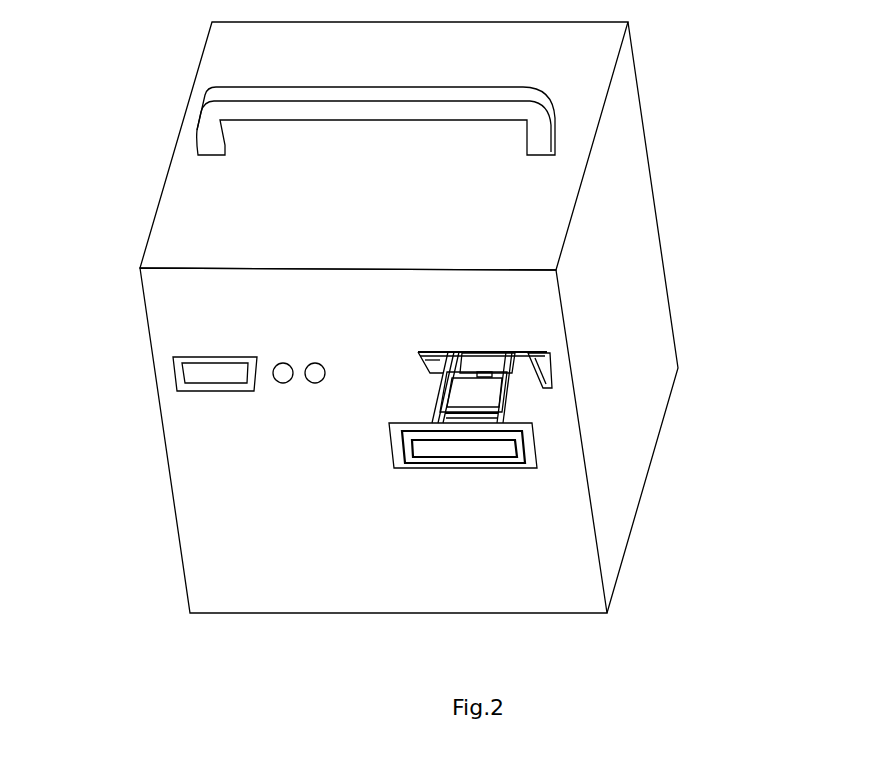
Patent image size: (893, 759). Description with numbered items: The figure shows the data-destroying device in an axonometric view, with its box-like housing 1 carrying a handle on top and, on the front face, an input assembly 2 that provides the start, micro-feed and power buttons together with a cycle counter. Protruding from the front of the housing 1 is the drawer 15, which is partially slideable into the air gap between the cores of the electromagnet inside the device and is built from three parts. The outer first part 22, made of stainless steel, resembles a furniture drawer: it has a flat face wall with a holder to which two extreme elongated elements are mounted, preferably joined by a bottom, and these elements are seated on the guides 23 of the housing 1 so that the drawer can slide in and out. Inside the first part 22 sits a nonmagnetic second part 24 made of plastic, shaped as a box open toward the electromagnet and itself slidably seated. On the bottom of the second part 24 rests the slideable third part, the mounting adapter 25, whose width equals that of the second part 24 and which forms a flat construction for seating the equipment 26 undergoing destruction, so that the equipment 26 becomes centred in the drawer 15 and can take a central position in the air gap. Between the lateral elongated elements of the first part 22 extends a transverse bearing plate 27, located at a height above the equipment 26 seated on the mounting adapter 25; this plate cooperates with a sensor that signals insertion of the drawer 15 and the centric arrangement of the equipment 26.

The housing 1 is at (623, 533).
The input assembly 2 is at (309, 376).
The drawer 15 is at (530, 443).
The outer first part 22 is at (513, 413).
The guides 23 is at (445, 359).
The nonmagnetic second part 24 is at (468, 397).
The mounting adapter 25 is at (515, 373).
The equipment undergoing destruction 26 is at (493, 368).
The transverse bearing plate 27 is at (474, 362).